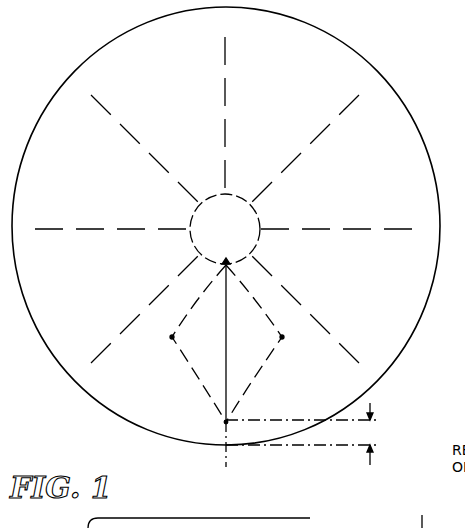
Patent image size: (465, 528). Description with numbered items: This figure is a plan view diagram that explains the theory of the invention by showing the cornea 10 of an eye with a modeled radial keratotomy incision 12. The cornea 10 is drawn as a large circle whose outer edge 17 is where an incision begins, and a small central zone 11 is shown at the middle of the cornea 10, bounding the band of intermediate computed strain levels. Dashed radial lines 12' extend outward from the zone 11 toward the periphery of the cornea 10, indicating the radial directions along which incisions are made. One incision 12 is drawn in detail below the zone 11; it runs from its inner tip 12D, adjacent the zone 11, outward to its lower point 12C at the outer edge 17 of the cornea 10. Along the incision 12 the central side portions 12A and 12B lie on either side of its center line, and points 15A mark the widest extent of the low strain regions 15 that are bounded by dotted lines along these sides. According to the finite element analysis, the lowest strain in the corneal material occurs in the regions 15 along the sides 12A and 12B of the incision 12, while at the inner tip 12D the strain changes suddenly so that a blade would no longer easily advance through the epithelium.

The cornea 10 is at (90, 425).
The zone 11 is at (253, 207).
The incision 12 is at (215, 343).
The crystal orientation lines 12' is at (225, 200).
The central side portion 12A is at (262, 353).
The central side portion 12B is at (213, 353).
The bottom apex of notch 12C is at (225, 423).
The inner tip of the incision 12D is at (230, 266).
The low strain regions 15 is at (190, 364).
The notch side points 15A is at (170, 338).
The outer edge of the cornea 17 is at (222, 447).